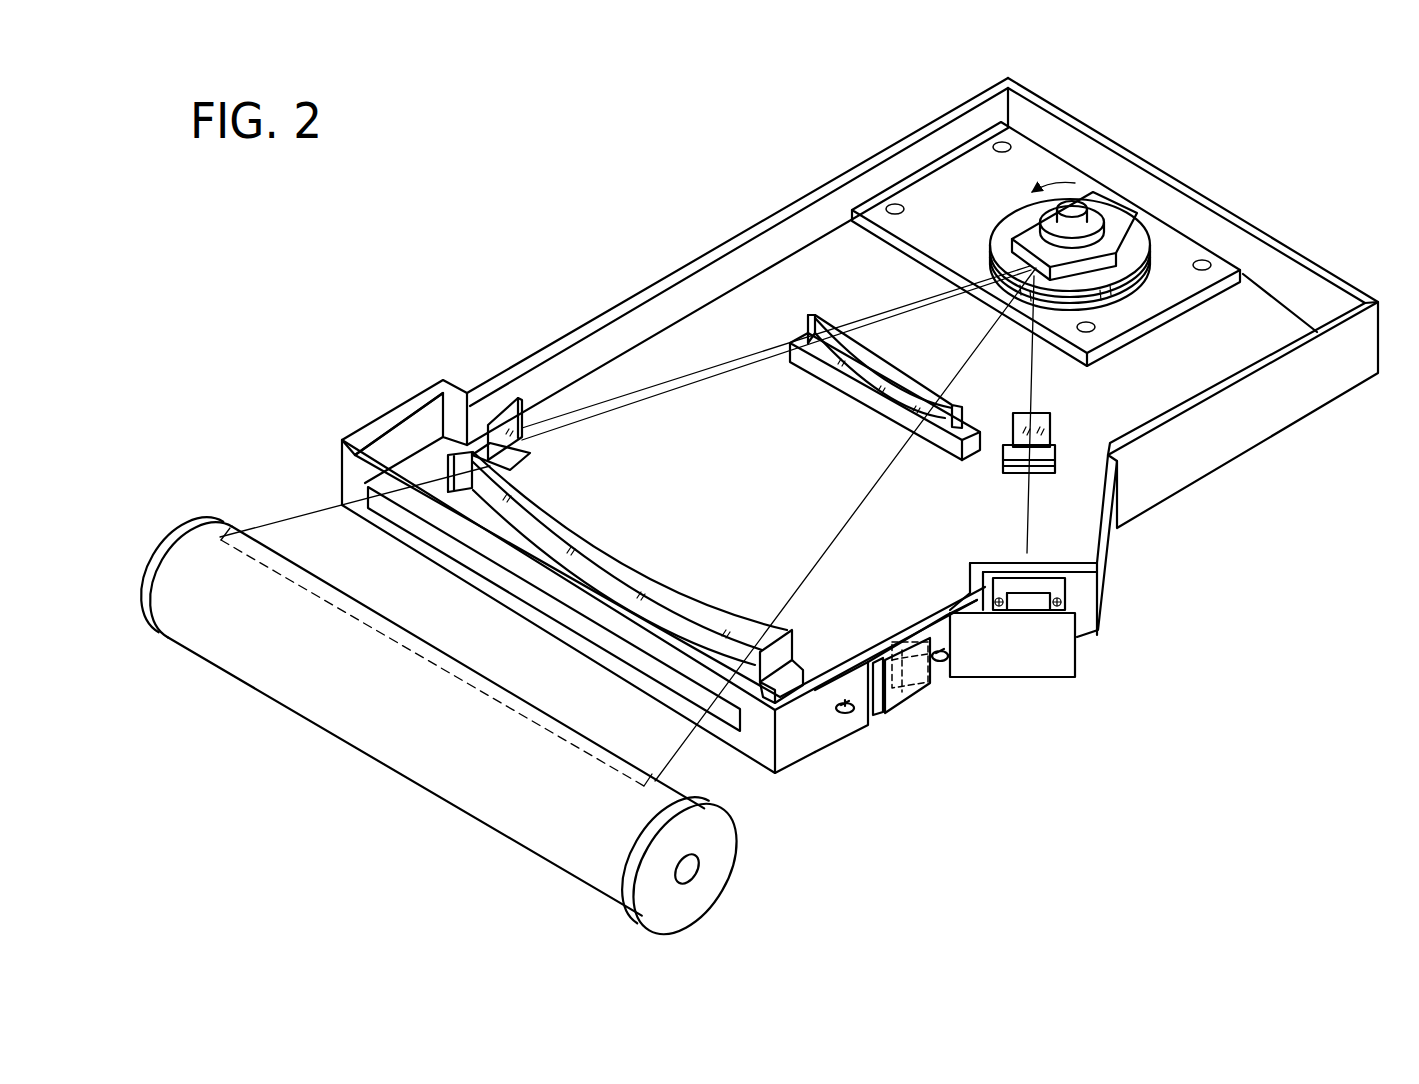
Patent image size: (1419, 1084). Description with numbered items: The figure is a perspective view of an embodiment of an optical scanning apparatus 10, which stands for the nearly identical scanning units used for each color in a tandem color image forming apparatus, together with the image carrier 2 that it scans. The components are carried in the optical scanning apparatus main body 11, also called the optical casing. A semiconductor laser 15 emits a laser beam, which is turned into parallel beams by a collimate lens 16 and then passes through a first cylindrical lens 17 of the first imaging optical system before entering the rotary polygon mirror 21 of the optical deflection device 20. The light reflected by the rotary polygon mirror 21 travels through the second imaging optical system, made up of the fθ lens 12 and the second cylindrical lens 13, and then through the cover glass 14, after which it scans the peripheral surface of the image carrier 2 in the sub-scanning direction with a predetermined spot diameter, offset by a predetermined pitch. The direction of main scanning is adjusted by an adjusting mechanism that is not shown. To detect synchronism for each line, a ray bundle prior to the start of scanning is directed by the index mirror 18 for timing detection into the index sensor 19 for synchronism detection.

The image carrier 2 is at (178, 516).
The optical scanning apparatus 10 is at (799, 429).
The optical scanning apparatus main body 11 is at (1250, 448).
The fθ lens 12 is at (828, 323).
The second cylindrical lens 13 is at (590, 541).
The cover glass 14 is at (440, 545).
The semiconductor laser 15 is at (1030, 604).
The collimate lens 16 is at (1050, 548).
The first cylindrical lens 17 is at (1050, 428).
The index mirror for timing detection 18 is at (500, 423).
The index sensor for synchronism detection 19 is at (917, 680).
The optical deflection device 20 is at (1176, 249).
The rotary polygon mirror 21 is at (1116, 217).